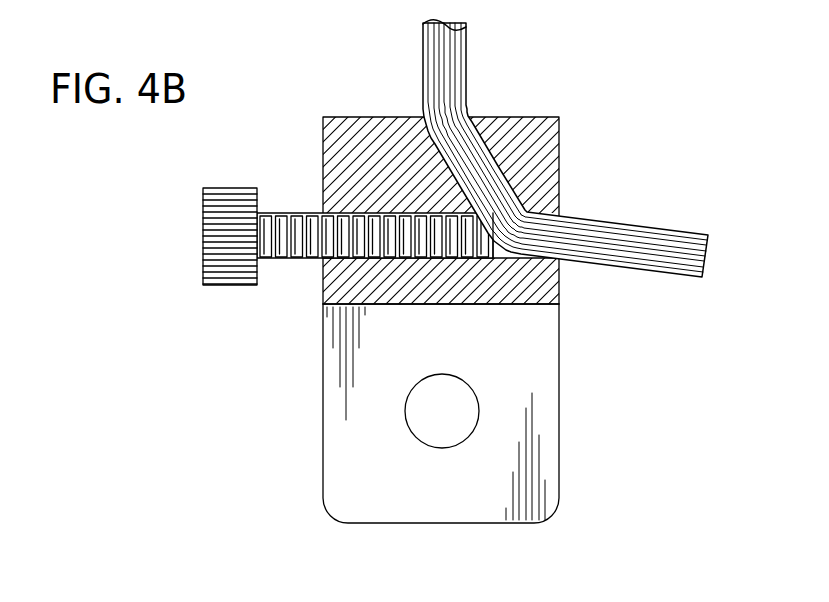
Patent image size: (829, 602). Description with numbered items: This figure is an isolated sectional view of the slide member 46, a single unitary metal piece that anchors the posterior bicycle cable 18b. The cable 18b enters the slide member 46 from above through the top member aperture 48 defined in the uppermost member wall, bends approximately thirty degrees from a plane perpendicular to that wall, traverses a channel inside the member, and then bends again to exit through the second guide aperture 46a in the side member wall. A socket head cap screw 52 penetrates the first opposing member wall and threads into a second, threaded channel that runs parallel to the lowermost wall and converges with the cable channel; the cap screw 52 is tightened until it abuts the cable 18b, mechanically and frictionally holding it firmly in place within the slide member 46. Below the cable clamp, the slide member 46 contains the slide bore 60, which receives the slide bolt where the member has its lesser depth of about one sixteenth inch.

The posterior bicycle cable 18b is at (648, 220).
The slide member 46 is at (442, 281).
The second guide aperture 46a is at (560, 262).
The top member aperture 48 is at (419, 116).
The socket head cap screw 52 is at (204, 260).
The slide bore 60 is at (457, 425).